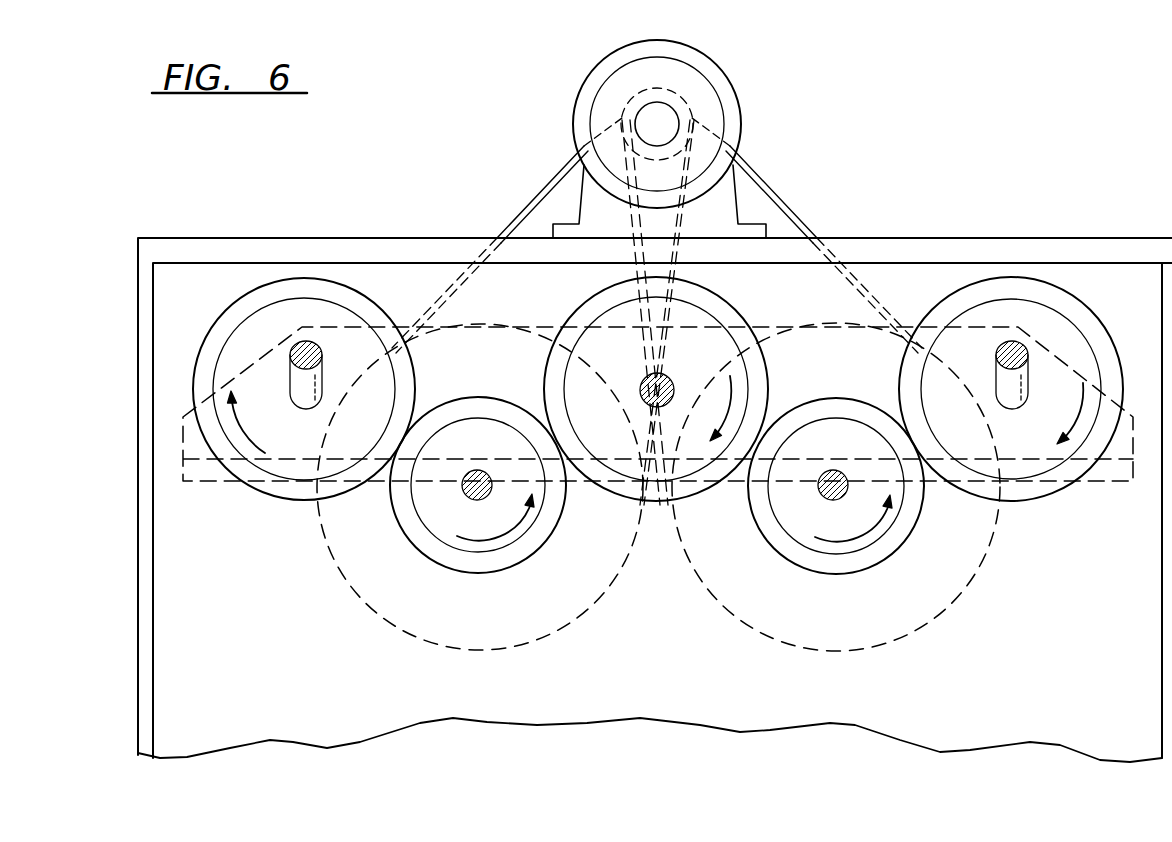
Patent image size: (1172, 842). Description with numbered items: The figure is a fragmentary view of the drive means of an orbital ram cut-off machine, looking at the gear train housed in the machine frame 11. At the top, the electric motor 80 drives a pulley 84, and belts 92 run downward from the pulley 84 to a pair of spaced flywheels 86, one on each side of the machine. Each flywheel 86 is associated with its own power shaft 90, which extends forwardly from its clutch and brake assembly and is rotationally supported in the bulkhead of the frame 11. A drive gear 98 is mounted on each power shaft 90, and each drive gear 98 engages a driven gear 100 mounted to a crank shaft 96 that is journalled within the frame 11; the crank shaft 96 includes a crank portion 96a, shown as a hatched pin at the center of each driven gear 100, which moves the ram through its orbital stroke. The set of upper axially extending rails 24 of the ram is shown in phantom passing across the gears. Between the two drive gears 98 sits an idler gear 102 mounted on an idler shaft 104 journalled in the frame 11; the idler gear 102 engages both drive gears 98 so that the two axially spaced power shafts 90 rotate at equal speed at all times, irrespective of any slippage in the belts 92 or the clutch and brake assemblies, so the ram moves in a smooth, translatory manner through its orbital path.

The frame structure 11 is at (1047, 247).
The upper axially extending rails 24 is at (200, 483).
The electric motor 80 is at (731, 78).
The pulley 84 is at (688, 117).
The flywheels 86 is at (577, 617).
The power shaft 90 is at (480, 497).
The belts 92 is at (530, 202).
The crank shaft 96 is at (303, 396).
The crank portion 96a is at (293, 350).
The drive gear 98 is at (533, 548).
The driven gear 100 is at (293, 490).
The idler gear 102 is at (722, 315).
The idler shaft 104 is at (670, 383).